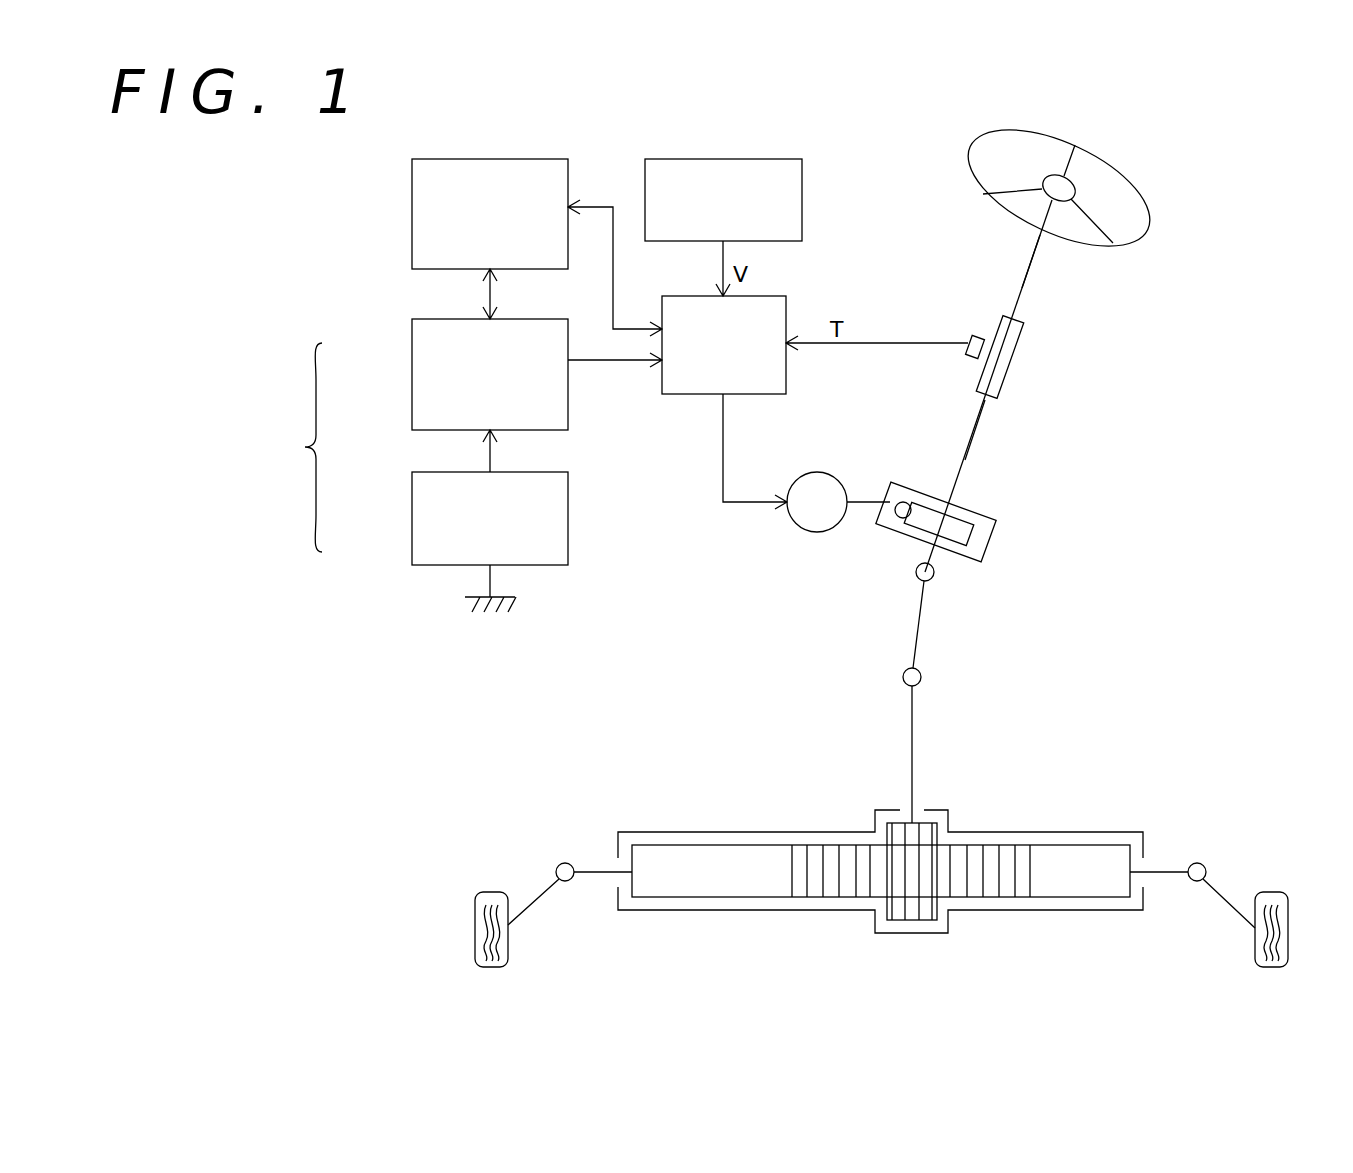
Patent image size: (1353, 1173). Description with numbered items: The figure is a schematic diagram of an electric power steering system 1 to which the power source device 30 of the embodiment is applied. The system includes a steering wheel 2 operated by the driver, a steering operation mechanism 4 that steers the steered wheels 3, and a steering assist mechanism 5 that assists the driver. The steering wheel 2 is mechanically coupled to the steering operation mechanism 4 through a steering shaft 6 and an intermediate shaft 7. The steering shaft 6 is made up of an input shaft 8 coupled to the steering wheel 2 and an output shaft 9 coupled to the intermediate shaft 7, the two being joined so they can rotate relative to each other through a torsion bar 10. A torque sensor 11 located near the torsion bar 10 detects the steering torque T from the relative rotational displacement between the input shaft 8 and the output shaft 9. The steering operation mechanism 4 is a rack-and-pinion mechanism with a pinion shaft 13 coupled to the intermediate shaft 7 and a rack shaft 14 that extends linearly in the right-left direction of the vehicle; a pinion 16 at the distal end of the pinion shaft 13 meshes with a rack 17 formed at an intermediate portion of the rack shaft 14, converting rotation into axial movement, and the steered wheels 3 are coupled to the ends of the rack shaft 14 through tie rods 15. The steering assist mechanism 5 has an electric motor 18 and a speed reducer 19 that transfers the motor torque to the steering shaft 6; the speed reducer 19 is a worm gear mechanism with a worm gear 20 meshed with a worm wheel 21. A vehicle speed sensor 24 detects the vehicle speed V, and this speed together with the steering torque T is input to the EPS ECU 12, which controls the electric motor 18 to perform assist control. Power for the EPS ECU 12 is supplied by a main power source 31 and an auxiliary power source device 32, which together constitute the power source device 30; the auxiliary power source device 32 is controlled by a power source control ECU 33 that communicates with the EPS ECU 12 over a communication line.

The electric power steering system 1 is at (1164, 154).
The steering wheel 2 is at (1150, 212).
The steered wheels 3 is at (492, 890).
The steering operation mechanism 4 is at (984, 845).
The steering assist mechanism 5 is at (933, 417).
The steering shaft 6 is at (1046, 272).
The intermediate shaft 7 is at (917, 620).
The input shaft 8 is at (1022, 300).
The output shaft 9 is at (970, 448).
The torsion bar 10 is at (1003, 358).
The torque sensor 11 is at (968, 340).
The EPS ECU 12 is at (677, 394).
The pinion shaft 13 is at (912, 735).
The rack shaft 14 is at (1088, 910).
The tie rods 15 is at (540, 897).
The pinion 16 is at (912, 920).
The rack 17 is at (820, 890).
The electric motor 18 is at (818, 472).
The speed reducer 19 is at (910, 484).
The worm gear 20 is at (895, 520).
The worm wheel 21 is at (975, 540).
The vehicle speed sensor 24 is at (690, 159).
The power source device 30 is at (290, 447).
The main power source 31 is at (412, 530).
The auxiliary power source device 32 is at (412, 357).
The power source control ECU 33 is at (412, 207).